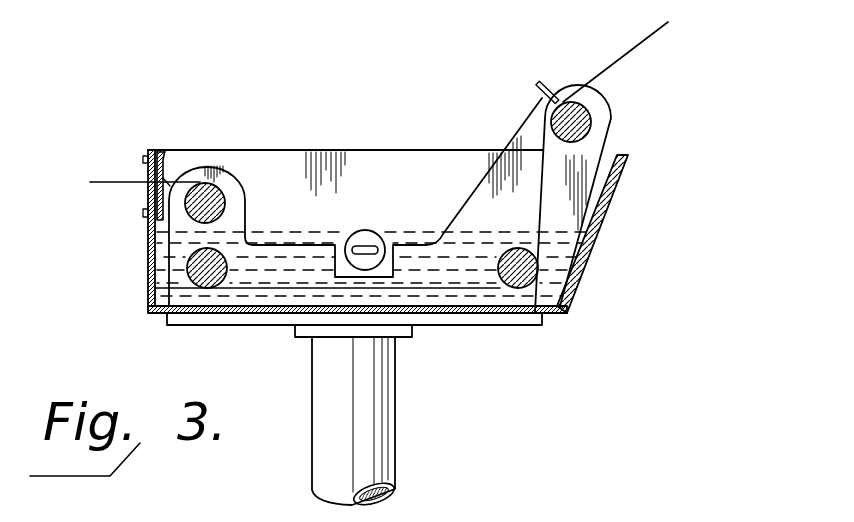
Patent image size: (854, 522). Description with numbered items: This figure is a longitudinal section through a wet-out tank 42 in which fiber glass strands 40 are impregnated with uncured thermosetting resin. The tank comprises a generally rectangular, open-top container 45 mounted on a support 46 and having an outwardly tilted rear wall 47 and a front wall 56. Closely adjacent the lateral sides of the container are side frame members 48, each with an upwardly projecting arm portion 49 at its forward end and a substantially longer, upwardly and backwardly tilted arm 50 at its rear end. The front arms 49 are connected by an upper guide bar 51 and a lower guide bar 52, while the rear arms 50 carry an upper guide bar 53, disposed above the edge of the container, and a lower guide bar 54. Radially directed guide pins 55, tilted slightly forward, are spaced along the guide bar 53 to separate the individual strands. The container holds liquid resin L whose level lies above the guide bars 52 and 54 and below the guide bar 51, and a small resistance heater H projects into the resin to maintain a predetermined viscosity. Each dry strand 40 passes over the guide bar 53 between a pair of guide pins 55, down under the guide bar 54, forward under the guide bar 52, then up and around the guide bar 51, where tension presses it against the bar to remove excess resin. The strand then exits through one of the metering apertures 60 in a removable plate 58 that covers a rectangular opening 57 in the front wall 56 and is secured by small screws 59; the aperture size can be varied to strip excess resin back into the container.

The strand 40 is at (90, 182).
The wet-out tank 42 is at (567, 313).
The container 45 is at (453, 318).
The support 46 is at (395, 393).
The rear wall 47 is at (608, 203).
The side frame member 48 is at (472, 193).
The arm portion 49 is at (238, 199).
The arm 50 is at (517, 132).
The upper guide bar 51 is at (217, 192).
The lower guide bar 52 is at (208, 283).
The upper guide bar 53 is at (580, 119).
The lower guide bar 54 is at (520, 282).
The guide pin 55 is at (540, 84).
The front wall 56 is at (148, 249).
The rectangular opening 57 is at (150, 195).
The removable plate 58 is at (161, 163).
The screw 59 is at (145, 160).
The metering aperture 60 is at (166, 181).
The liquid L is at (308, 232).
The resistance heater H is at (370, 233).